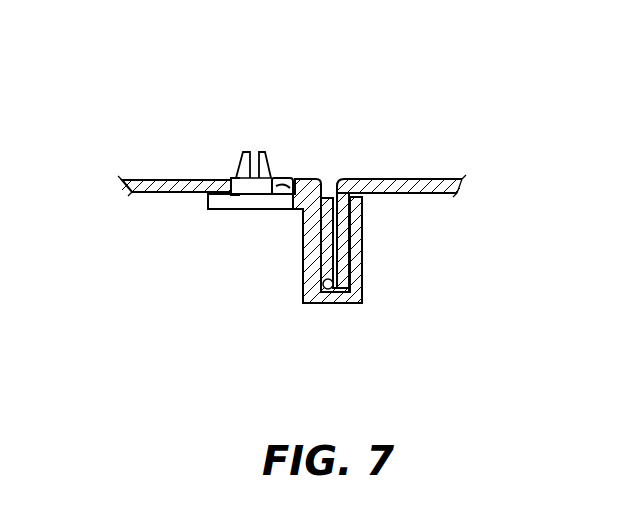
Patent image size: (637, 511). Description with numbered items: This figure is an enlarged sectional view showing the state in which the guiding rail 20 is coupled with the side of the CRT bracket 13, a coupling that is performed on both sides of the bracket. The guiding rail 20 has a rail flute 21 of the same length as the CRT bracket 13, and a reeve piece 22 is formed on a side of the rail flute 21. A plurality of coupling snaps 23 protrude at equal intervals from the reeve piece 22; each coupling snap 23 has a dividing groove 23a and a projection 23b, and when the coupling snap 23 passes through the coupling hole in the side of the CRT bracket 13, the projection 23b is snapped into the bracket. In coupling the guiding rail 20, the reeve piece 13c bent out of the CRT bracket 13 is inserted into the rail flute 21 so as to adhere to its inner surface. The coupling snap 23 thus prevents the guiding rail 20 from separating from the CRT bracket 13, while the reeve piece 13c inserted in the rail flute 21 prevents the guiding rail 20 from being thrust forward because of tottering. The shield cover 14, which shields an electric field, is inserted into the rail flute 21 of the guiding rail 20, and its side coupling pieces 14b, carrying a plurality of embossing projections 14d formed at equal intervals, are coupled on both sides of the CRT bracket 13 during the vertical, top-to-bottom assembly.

The CRT bracket 13 is at (148, 178).
The reeve piece 13c is at (313, 250).
The shield cover 14 is at (415, 178).
The side coupling pieces 14b is at (347, 219).
The embossing projections 14d is at (348, 243).
The guiding rail 20 is at (285, 302).
The rail flute 21 is at (338, 289).
The reeve piece 22 is at (238, 203).
The coupling snap 23 is at (272, 128).
The dividing groove 23a is at (254, 153).
The projection 23b is at (227, 178).